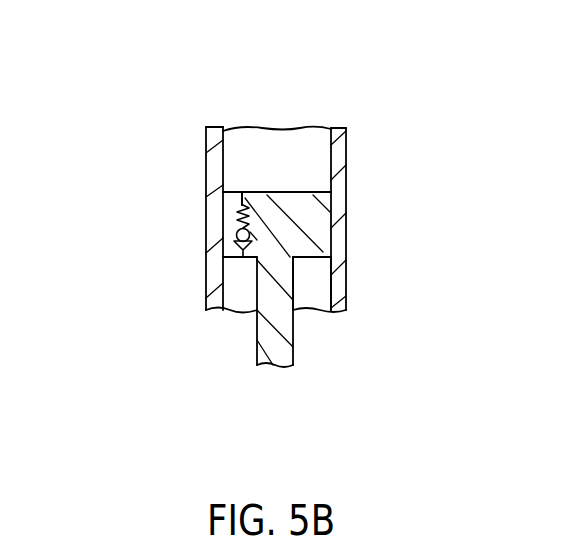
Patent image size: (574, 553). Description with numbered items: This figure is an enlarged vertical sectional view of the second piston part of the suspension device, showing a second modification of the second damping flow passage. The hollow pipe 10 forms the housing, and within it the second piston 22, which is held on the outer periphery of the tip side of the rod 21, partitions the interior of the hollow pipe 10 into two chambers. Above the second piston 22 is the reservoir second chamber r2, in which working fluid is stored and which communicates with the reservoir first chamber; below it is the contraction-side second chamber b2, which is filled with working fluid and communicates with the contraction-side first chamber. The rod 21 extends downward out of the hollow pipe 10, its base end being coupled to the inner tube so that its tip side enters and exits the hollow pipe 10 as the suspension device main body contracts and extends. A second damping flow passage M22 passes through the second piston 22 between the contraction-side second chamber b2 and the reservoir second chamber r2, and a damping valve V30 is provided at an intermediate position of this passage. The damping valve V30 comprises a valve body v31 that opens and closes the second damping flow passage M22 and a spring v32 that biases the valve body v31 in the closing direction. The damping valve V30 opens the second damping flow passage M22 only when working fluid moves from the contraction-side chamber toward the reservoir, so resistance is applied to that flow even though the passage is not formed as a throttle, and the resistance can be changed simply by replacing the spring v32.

The hollow pipe 10 is at (342, 152).
The reservoir second chamber r2 is at (243, 140).
The second piston 22 is at (318, 227).
The rod 21 is at (267, 343).
The contraction-side second chamber b2 is at (312, 300).
The damping valve V30 is at (205, 236).
The second damping flow passage M22 is at (237, 205).
The spring v32 is at (247, 212).
The valve body v31 is at (233, 230).